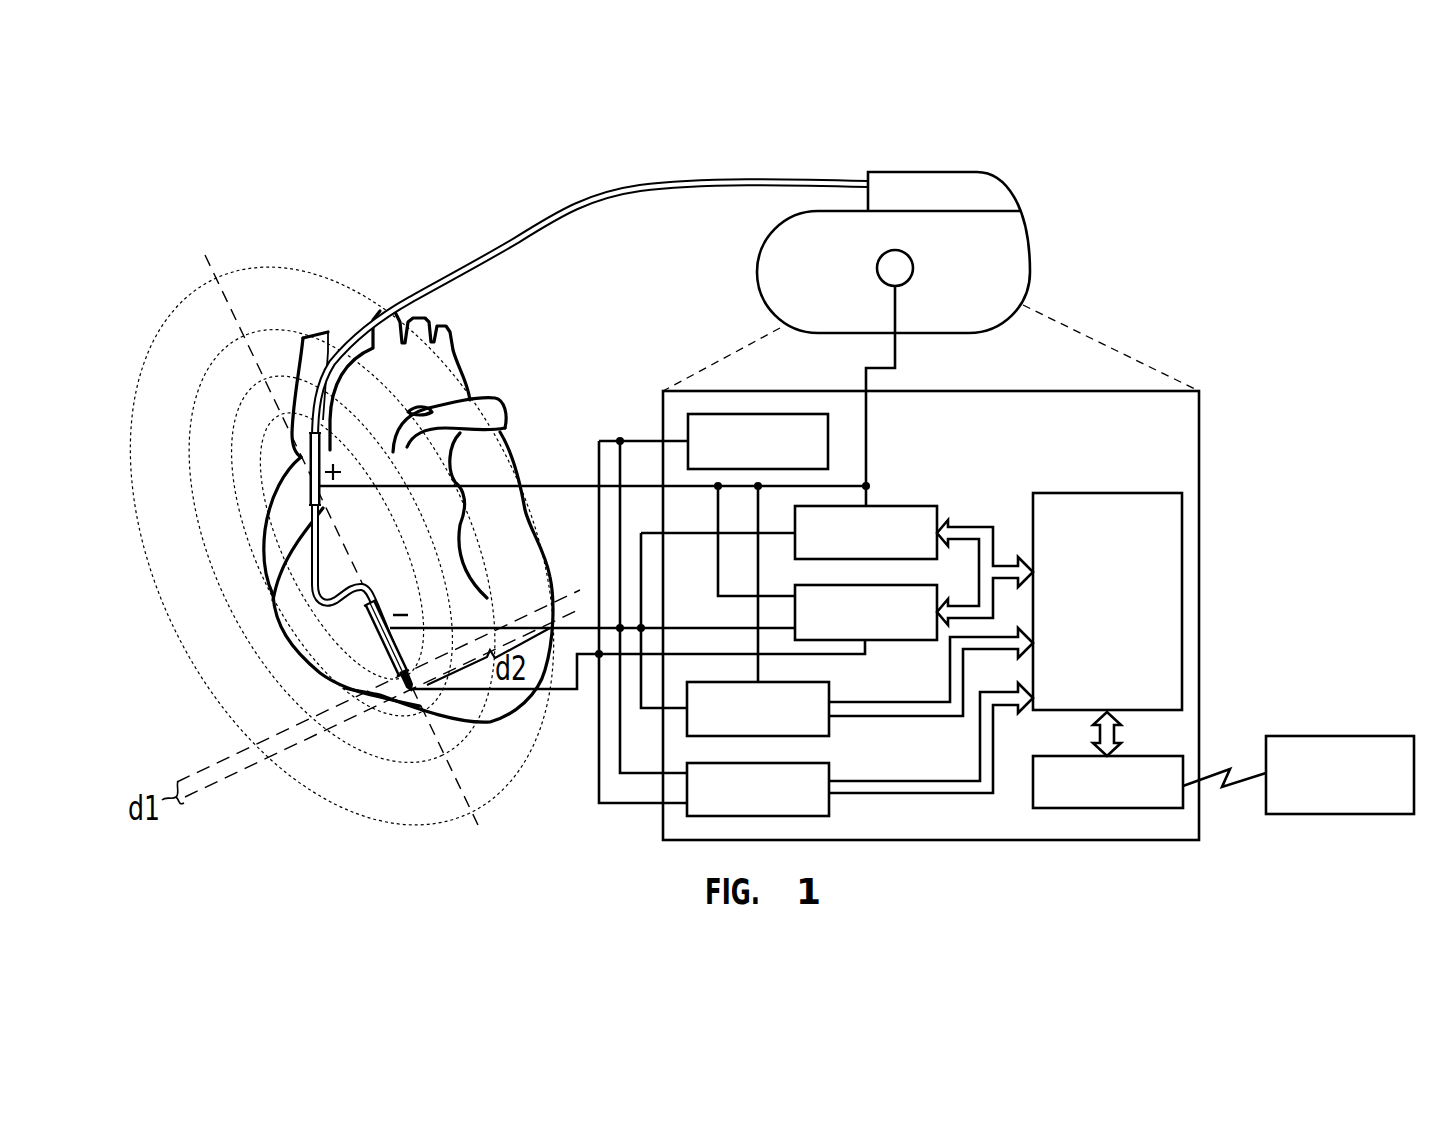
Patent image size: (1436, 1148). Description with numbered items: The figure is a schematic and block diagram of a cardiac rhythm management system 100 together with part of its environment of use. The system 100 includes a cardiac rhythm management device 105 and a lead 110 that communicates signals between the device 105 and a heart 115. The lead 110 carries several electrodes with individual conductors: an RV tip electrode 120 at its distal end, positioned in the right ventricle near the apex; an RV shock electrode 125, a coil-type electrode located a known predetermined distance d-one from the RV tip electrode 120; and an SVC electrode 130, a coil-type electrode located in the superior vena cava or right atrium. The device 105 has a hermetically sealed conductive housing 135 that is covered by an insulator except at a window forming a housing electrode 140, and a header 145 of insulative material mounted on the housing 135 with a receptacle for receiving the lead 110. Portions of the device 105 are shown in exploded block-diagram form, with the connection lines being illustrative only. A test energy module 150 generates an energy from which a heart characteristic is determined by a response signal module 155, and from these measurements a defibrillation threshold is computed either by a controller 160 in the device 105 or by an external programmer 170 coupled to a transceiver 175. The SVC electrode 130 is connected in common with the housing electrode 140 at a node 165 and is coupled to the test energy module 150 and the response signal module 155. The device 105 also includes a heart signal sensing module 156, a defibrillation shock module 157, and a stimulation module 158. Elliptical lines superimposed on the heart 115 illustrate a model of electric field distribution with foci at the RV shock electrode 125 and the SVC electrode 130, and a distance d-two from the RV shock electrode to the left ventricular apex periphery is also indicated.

The cardiac rhythm management system 100 is at (1273, 426).
The cardiac rhythm management device 105 is at (1045, 175).
The lead 110 is at (705, 181).
The heart 115 is at (490, 375).
The RV tip electrode 120 is at (410, 694).
The RV shock electrode 125 is at (383, 645).
The SVC electrode 130 is at (303, 456).
The housing 135 is at (1031, 272).
The housing electrode 140 is at (876, 270).
The header 145 is at (920, 172).
The test energy module 150 is at (888, 506).
The response signal module 155 is at (868, 585).
The heart signal sensing module 156 is at (761, 414).
The shock module 157 is at (781, 682).
The stimulation module 158 is at (761, 763).
The controller 160 is at (1108, 492).
The node 165 is at (553, 484).
The external programmer 170 is at (1338, 735).
The transceiver 175 is at (1145, 755).